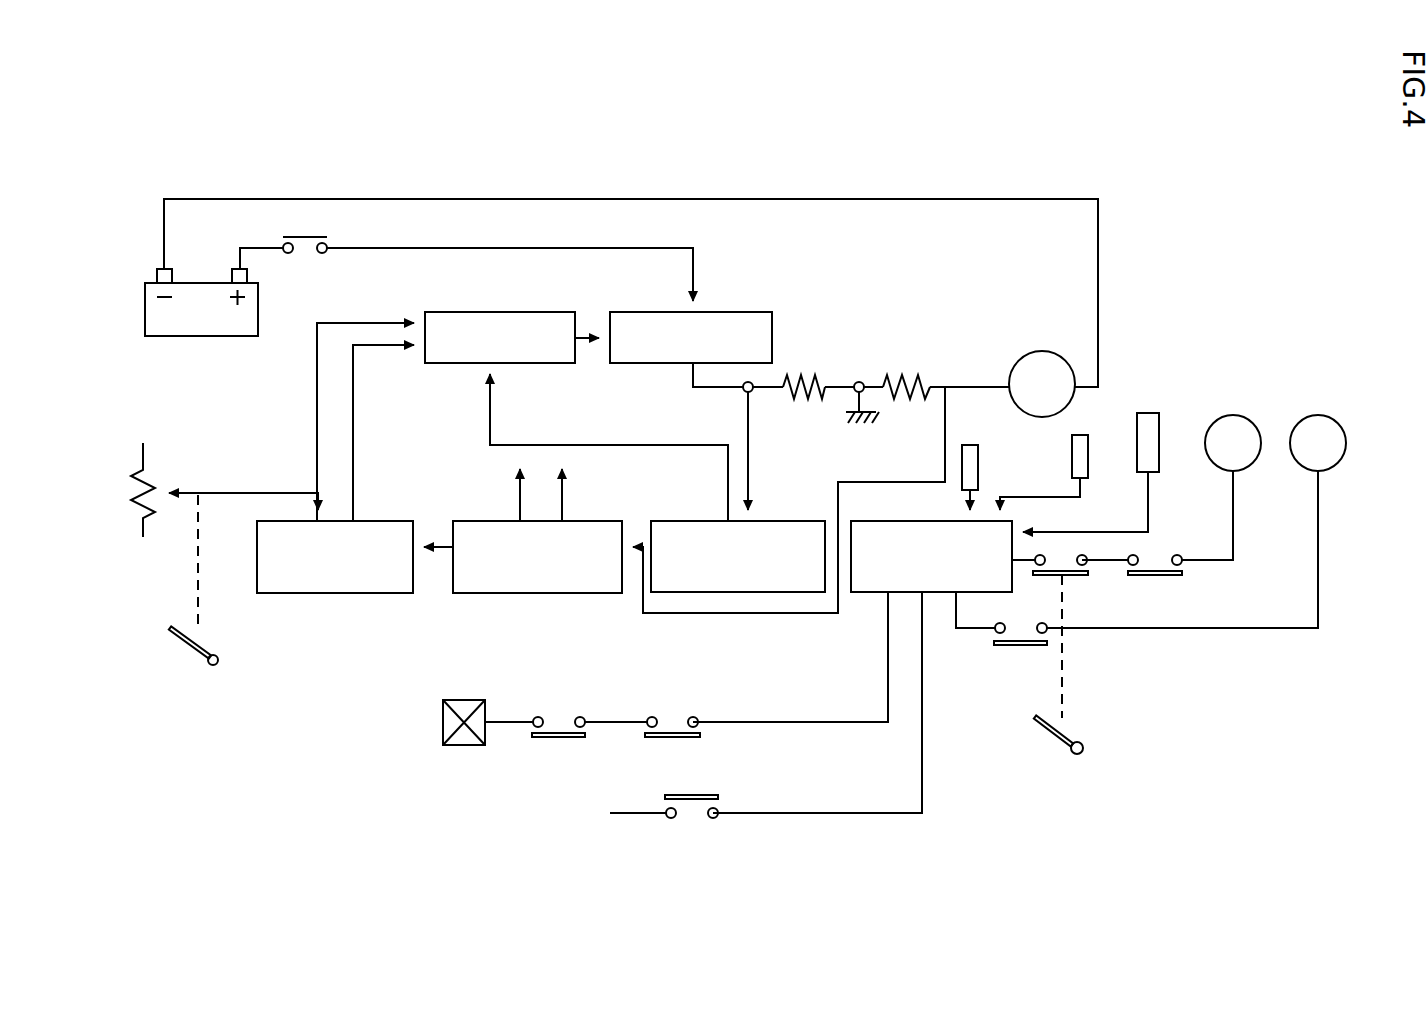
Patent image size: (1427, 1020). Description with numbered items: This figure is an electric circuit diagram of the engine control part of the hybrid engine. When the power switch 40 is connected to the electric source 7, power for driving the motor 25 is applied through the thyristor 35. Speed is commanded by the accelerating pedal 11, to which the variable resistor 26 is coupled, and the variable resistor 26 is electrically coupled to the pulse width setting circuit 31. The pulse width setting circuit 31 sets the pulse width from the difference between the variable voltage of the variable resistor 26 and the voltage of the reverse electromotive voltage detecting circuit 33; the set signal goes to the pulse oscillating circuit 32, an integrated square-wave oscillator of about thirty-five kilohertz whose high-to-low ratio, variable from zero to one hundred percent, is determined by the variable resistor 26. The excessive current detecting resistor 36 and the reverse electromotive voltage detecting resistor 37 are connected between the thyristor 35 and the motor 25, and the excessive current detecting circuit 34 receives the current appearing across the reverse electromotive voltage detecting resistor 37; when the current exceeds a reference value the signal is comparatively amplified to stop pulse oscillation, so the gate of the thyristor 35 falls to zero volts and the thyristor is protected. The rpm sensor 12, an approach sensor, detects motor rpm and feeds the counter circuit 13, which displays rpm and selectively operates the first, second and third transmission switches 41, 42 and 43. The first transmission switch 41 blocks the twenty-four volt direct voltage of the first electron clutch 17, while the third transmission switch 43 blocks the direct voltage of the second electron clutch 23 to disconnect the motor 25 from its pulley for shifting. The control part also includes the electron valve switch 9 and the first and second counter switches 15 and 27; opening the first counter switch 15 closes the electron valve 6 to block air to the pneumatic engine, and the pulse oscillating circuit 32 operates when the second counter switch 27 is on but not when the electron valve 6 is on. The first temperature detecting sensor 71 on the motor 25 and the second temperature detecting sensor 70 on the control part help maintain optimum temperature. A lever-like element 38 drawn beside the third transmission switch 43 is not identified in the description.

The electron valve 6 is at (440, 746).
The electric source 7 is at (160, 318).
The electron valve switch 9 is at (548, 746).
The accelerating pedal 11 is at (192, 656).
The rpm sensor 12 is at (1145, 425).
The counter circuit 13 is at (865, 585).
The first counter switch 15 is at (652, 746).
The first electron clutch 17 is at (1238, 428).
The second electron clutch 23 is at (1318, 432).
The motor 25 is at (1031, 362).
The variable resistor 26 is at (148, 470).
The second counter switch 27 is at (690, 823).
The pulse width setting circuit 31 is at (322, 585).
The pulse oscillating circuit 32 is at (500, 320).
The reverse electromotive voltage detecting circuit 33 is at (512, 585).
The excessive current detecting circuit 34 is at (745, 585).
The thyristor 35 is at (720, 316).
The excessive current detecting resistor 36 is at (803, 374).
The reverse electromotive voltage detecting resistor 37 is at (910, 374).
The operating lever 38 is at (1043, 746).
The power switch 40 is at (308, 238).
The first transmission switch 41 is at (1073, 578).
The second transmission switch 42 is at (1155, 578).
The third transmission switch 43 is at (1018, 647).
The second temperature detecting sensor 70 is at (967, 456).
The first temperature detecting sensor 71 is at (1080, 447).